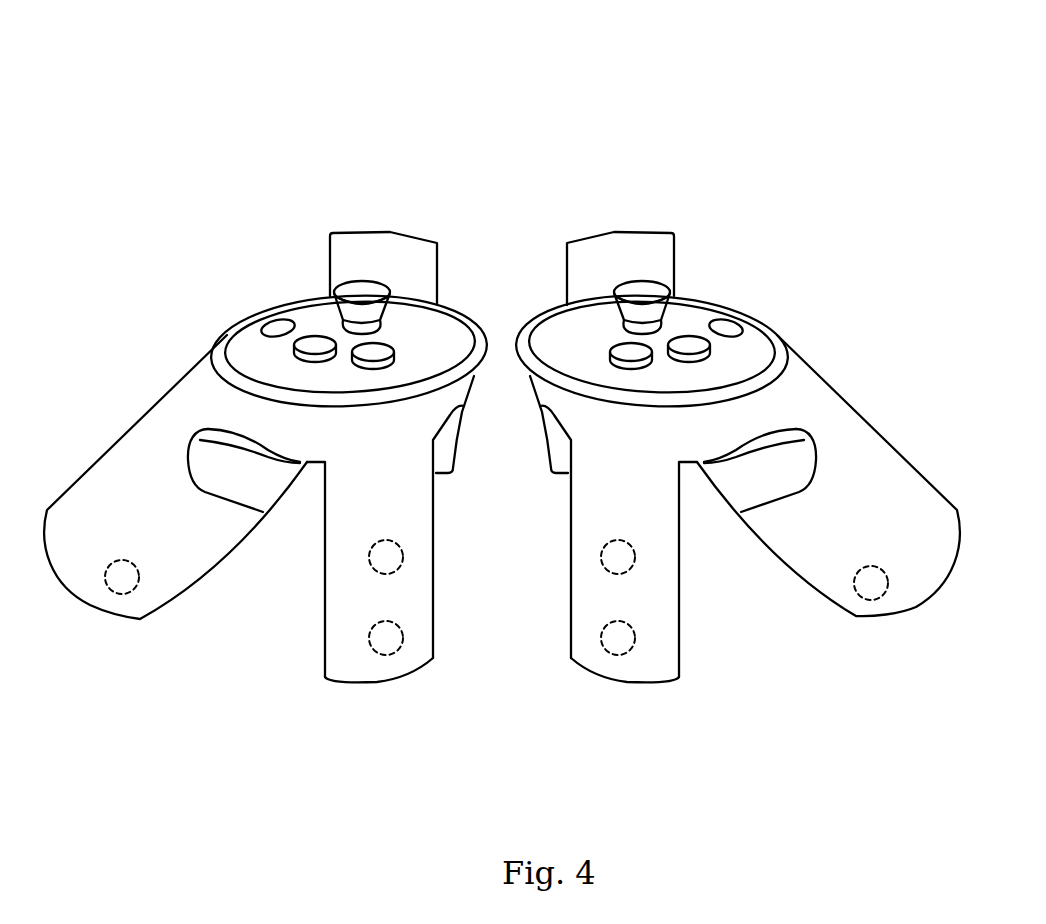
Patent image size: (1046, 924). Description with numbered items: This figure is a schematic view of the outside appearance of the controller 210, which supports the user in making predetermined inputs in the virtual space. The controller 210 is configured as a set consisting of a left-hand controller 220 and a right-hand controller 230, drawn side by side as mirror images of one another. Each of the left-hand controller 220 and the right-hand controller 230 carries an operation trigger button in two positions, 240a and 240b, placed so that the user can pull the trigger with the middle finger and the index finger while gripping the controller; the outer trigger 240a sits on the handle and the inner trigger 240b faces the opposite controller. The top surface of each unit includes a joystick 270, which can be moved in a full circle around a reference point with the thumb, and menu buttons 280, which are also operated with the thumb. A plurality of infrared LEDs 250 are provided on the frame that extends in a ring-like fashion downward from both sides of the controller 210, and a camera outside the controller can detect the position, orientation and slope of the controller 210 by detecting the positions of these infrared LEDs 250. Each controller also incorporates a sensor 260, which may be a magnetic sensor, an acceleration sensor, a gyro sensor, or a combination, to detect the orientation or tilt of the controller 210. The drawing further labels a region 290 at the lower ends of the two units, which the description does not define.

The controller 210 is at (517, 52).
The left-hand controller 220 is at (346, 197).
The right-hand controller 230 is at (657, 180).
The operation trigger button 240a is at (227, 470).
The operation trigger button 240b is at (555, 462).
The infrared LED 250 is at (392, 555).
The sensor 260 is at (125, 588).
The joystick 270 is at (355, 291).
The menu button 280 is at (315, 338).
The sensor 290 is at (597, 670).